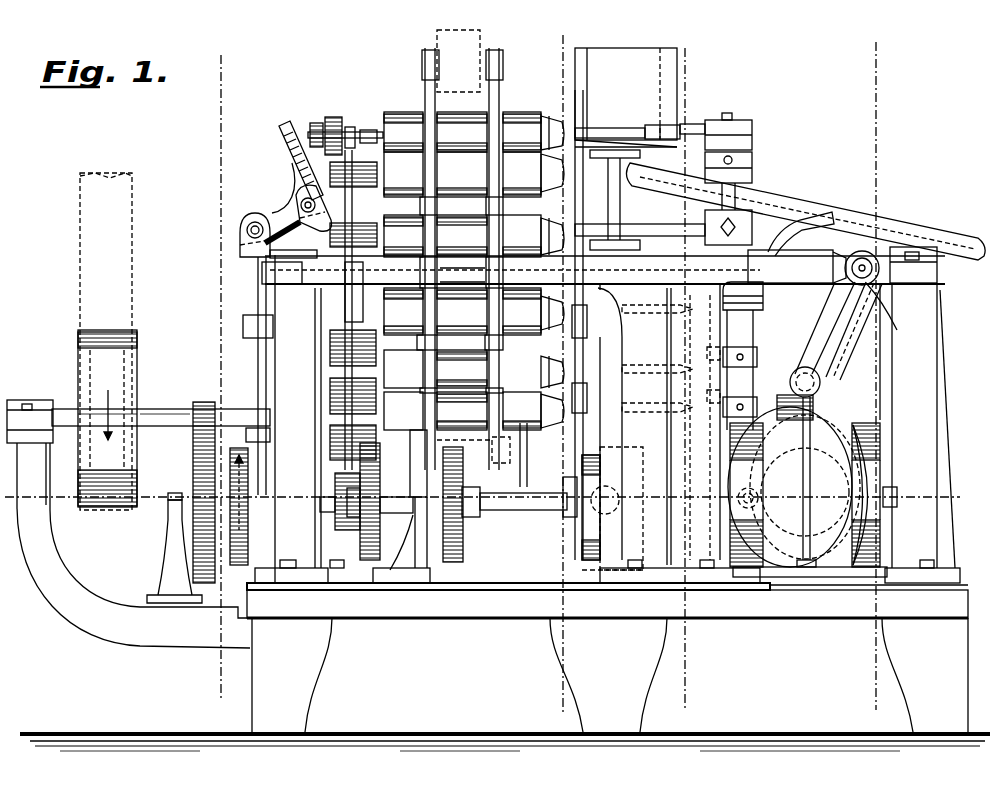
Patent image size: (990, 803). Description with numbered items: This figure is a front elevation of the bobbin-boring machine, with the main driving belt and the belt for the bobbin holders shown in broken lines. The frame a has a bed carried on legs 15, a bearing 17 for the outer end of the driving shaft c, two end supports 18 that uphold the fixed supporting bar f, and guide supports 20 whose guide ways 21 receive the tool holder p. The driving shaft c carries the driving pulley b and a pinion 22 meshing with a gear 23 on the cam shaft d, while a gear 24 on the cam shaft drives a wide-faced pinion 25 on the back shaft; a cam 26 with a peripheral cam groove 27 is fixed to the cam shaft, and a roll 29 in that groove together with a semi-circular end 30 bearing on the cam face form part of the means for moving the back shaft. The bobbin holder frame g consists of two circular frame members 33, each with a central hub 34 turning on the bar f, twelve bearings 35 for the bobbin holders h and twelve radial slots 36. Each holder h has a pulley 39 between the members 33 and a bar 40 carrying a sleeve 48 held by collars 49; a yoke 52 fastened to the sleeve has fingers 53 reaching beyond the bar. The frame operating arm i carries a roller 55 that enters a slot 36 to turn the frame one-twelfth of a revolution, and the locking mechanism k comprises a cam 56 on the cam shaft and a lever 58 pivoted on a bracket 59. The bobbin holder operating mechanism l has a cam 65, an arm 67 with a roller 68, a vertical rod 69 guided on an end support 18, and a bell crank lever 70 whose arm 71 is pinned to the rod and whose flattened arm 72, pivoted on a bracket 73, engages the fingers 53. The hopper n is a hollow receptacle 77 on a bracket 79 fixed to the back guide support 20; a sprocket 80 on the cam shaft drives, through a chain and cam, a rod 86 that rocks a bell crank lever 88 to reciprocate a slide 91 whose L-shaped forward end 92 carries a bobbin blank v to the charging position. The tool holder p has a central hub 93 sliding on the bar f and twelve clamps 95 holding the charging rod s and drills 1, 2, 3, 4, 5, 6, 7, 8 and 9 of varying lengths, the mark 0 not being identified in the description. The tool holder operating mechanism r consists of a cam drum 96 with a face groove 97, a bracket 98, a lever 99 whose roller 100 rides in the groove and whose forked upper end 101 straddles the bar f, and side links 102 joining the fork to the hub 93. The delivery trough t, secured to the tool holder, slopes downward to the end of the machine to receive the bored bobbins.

The stop block 0 is at (586, 348).
The drill 1 is at (682, 172).
The drill 2 is at (490, 498).
The drill 3 is at (242, 706).
The drill 4 is at (558, 703).
The drill 5 is at (874, 699).
The drill 6 is at (682, 700).
The drill 7 is at (660, 372).
The drill 8 is at (660, 306).
The drill 9 is at (700, 229).
The legs 15 is at (922, 639).
The bearing 17 is at (30, 402).
The end supports 18 is at (607, 415).
The guide supports 20 is at (690, 426).
The guide ways 21 is at (708, 300).
The pinion 22 is at (203, 402).
The gear 23 is at (198, 458).
The gear 24 is at (362, 540).
The wide-faced pinion 25 is at (342, 476).
The cam 26 is at (88, 622).
The cam groove 27 is at (592, 548).
The roll 29 is at (938, 300).
The semi-circular end 30 is at (598, 468).
The circular frame members 33 is at (428, 66).
The central hub 34 is at (462, 274).
The bearings 35 is at (400, 112).
The radial slots 36 is at (497, 368).
The pulley 39 is at (460, 118).
The bar 40 is at (366, 128).
The sleeve 48 is at (348, 380).
The collars 49 is at (318, 122).
The yoke 52 is at (338, 116).
The fingers 53 is at (330, 338).
The roller 55 is at (528, 440).
The cam 56 is at (461, 514).
The lever 58 is at (440, 490).
The bracket 59 is at (410, 470).
The cam 65 is at (197, 525).
The arm 67 is at (262, 488).
The roller 68 is at (248, 480).
The rod 69 is at (257, 272).
The bell crank lever 70 is at (292, 165).
The arm 71 is at (280, 212).
The flattened arm 72 is at (288, 122).
The bracket 73 is at (315, 228).
The hollow receptacle 77 is at (622, 52).
The bracket 79 is at (628, 220).
The sprocket 80 is at (566, 480).
The rod 86 is at (584, 428).
The bell crank lever 88 is at (580, 188).
The slide 91 is at (594, 145).
The L-shaped forward end 92 is at (642, 152).
The central hub 93 is at (757, 302).
The clamps 95 is at (752, 168).
The cam drum 96 is at (860, 425).
The cam groove 97 is at (878, 482).
The bracket 98 is at (812, 467).
The lever 99 is at (808, 338).
The roller 100 is at (752, 505).
The forked upper end 101 is at (875, 296).
The side links 102 is at (813, 267).
The frame a is at (476, 604).
The driving pulley b is at (80, 340).
The driving shaft c is at (160, 410).
The cam shaft d is at (500, 510).
The fixed supporting bar f is at (305, 290).
The bobbin holder frame g is at (423, 58).
The bobbin holders h is at (553, 116).
The bobbin holder frame operating arm i is at (514, 468).
The bobbin holder frame locking mechanism k is at (405, 543).
The bobbin holder operating mechanism l is at (249, 222).
The hopper n is at (615, 160).
The tool holder p is at (735, 130).
The tool holder operating mechanism r is at (832, 352).
The charging rod s is at (693, 124).
The delivery trough t is at (830, 210).
The bobbin blank v is at (652, 125).